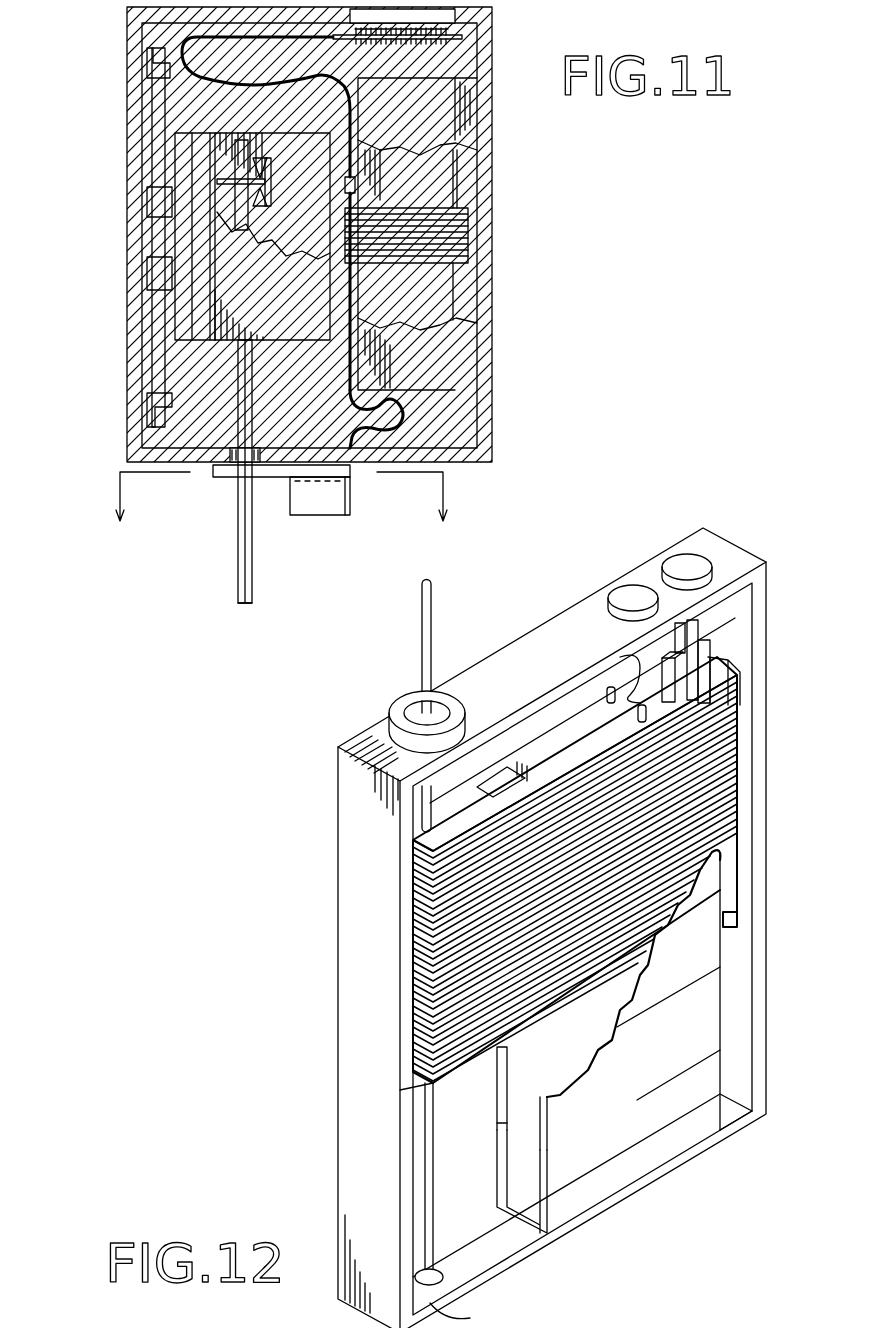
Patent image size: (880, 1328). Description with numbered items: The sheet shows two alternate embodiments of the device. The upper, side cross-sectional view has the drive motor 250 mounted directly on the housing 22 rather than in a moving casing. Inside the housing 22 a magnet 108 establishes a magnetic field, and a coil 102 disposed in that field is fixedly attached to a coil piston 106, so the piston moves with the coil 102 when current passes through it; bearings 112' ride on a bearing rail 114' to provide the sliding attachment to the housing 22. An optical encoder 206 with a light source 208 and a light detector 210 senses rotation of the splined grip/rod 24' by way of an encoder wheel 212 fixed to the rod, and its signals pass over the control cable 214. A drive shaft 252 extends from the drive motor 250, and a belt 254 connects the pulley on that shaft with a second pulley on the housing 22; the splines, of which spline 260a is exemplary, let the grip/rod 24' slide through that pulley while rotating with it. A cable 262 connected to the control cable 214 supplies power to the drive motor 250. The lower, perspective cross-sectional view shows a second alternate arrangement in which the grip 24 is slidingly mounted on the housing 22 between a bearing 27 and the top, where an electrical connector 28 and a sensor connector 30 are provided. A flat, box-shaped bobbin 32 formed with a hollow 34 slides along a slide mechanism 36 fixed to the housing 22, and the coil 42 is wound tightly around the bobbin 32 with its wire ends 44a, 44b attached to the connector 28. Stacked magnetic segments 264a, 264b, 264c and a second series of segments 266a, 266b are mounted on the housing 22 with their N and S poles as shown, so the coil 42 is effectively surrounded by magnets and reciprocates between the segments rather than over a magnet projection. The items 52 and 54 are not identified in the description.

In FIG. 11, the housing 22 is at (480, 290).
In FIG. 12, the housing 22 is at (362, 855).
In FIG. 12, the grip (rod) 24 is at (386, 925).
In FIG. 11, the grip/rod 24' is at (182, 483).
In FIG. 12, the bearing 27 is at (440, 1278).
In FIG. 12, the electrical connector 28 is at (634, 596).
In FIG. 12, the sensor connector 30 is at (693, 566).
In FIG. 12, the bobbin 32 is at (435, 1080).
In FIG. 12, the hollow 34 is at (550, 755).
In FIG. 12, the slide mechanism 36 is at (733, 685).
In FIG. 12, the coil 42 is at (440, 967).
In FIG. 12, the end of electrical wire 44a is at (613, 688).
In FIG. 12, the end of electrical wire 44b is at (642, 705).
In FIG. 12, the post 52 is at (703, 658).
In FIG. 12, the back plate 54 is at (730, 617).
In FIG. 11, the coil 102 is at (440, 237).
In FIG. 11, the coil piston 106 is at (355, 193).
In FIG. 11, the magnet 108 is at (437, 355).
In FIG. 11, the bearings 112' is at (90, 237).
In FIG. 11, the bearing rail 114' is at (90, 396).
In FIG. 11, the optical encoder 206 is at (220, 182).
In FIG. 11, the light source 208 is at (257, 197).
In FIG. 11, the light detector 210 is at (252, 163).
In FIG. 11, the encoder wheel 212 is at (254, 186).
In FIG. 11, the control cable 214 is at (187, 48).
In FIG. 11, the drive motor 250 is at (347, 503).
In FIG. 11, the drive shaft 252 is at (320, 482).
In FIG. 11, the belt 254 is at (225, 470).
In FIG. 11, the spline 260a is at (241, 604).
In FIG. 11, the cable 262 is at (402, 414).
In FIG. 12, the magnetic segment 264a is at (703, 1100).
In FIG. 12, the magnetic segment 264b is at (700, 1018).
In FIG. 12, the magnetic segment 264c is at (700, 935).
In FIG. 12, the magnetic segment 266a is at (530, 1153).
In FIG. 12, the magnetic segment 266b is at (543, 1058).